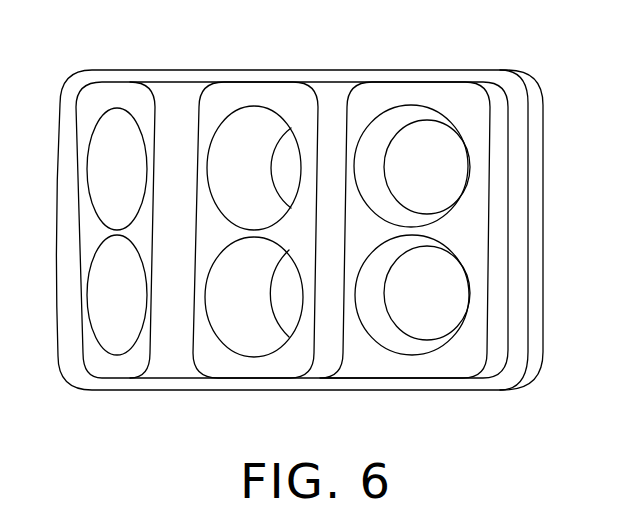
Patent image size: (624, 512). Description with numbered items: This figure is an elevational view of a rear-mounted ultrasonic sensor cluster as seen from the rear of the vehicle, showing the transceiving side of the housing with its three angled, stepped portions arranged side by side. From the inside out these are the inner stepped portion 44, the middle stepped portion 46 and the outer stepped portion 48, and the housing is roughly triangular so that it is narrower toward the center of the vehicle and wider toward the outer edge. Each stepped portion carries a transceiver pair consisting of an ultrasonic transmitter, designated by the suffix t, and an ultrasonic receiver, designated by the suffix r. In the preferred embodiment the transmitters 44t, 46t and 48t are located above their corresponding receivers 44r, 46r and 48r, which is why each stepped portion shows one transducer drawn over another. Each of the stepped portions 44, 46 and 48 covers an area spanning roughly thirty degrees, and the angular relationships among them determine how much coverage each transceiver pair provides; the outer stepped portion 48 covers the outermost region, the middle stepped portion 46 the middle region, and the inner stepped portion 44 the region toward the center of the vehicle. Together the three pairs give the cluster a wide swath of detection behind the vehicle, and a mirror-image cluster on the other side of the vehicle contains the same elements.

The inner stepped portion 44 is at (97, 120).
The ultrasonic transmitter 44t is at (120, 127).
The ultrasonic receiver 44r is at (132, 330).
The middle stepped portion 46 is at (210, 355).
The ultrasonic transmitter 46t is at (252, 125).
The ultrasonic receiver 46r is at (262, 343).
The outer stepped portion 48 is at (465, 102).
The ultrasonic transmitter 48t is at (422, 135).
The ultrasonic receiver 48r is at (407, 348).